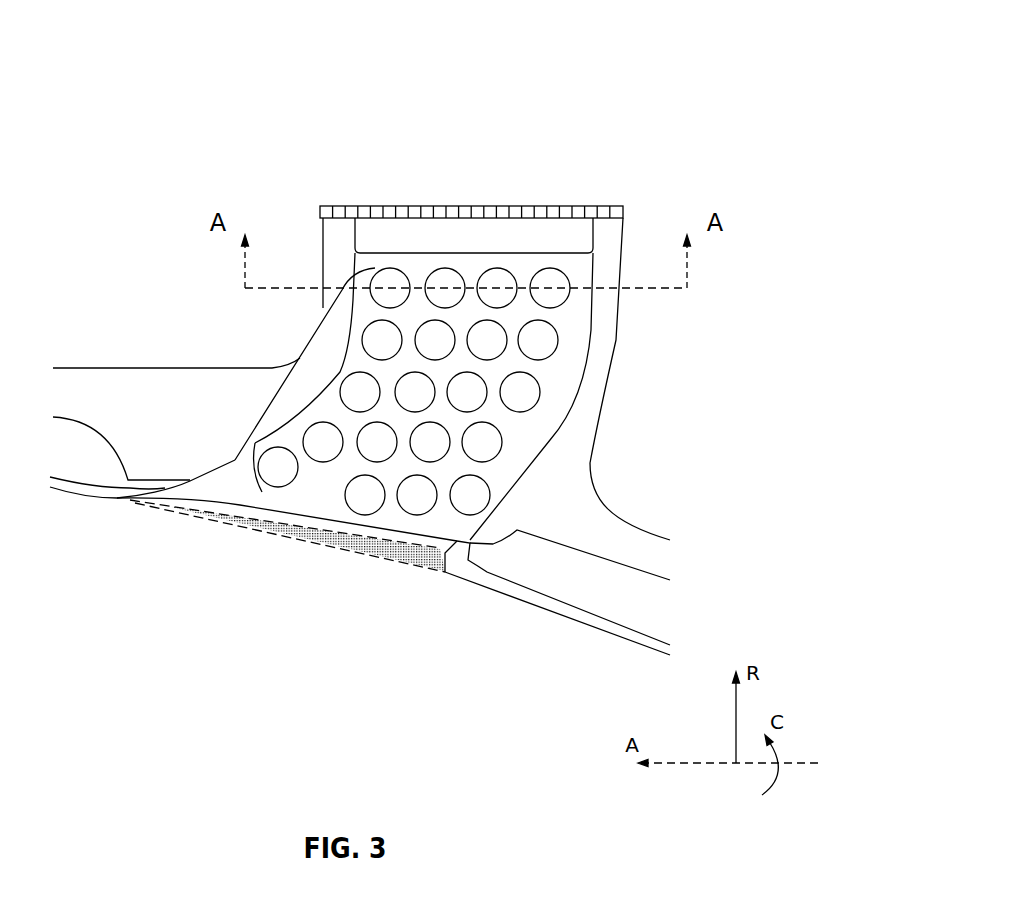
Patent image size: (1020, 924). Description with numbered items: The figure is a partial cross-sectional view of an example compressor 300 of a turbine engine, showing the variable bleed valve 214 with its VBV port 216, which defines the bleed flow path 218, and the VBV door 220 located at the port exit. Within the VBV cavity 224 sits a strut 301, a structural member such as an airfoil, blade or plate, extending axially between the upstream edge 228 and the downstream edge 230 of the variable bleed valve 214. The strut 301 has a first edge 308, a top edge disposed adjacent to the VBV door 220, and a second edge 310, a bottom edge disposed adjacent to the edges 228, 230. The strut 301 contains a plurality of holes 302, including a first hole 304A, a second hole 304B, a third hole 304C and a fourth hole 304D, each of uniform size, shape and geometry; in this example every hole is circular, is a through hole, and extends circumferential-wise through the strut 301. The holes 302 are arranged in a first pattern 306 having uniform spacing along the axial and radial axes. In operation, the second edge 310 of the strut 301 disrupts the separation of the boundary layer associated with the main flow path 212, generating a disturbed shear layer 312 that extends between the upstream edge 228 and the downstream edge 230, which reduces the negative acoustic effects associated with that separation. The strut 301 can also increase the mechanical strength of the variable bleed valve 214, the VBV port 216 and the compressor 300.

The variable bleed valve 214 is at (640, 88).
The VBV port 216 is at (647, 208).
The VBV door 220 is at (337, 205).
The first edge 308 is at (360, 218).
The strut 301 is at (475, 260).
The first hole 304A is at (405, 267).
The second hole 304B is at (460, 267).
The third hole 304C is at (495, 267).
The fourth hole 304D is at (547, 267).
The compressor 300 is at (98, 308).
The plurality of holes 302 is at (300, 358).
The first pattern 306 is at (305, 348).
The VBV cavity 224 is at (551, 430).
The upstream edge 228 is at (112, 502).
The bleed flow path 218 is at (166, 577).
The second edge 310 is at (226, 503).
The disturbed shear layer 312 is at (347, 550).
The downstream edge 230 is at (447, 574).
The main flow path 212 is at (241, 675).